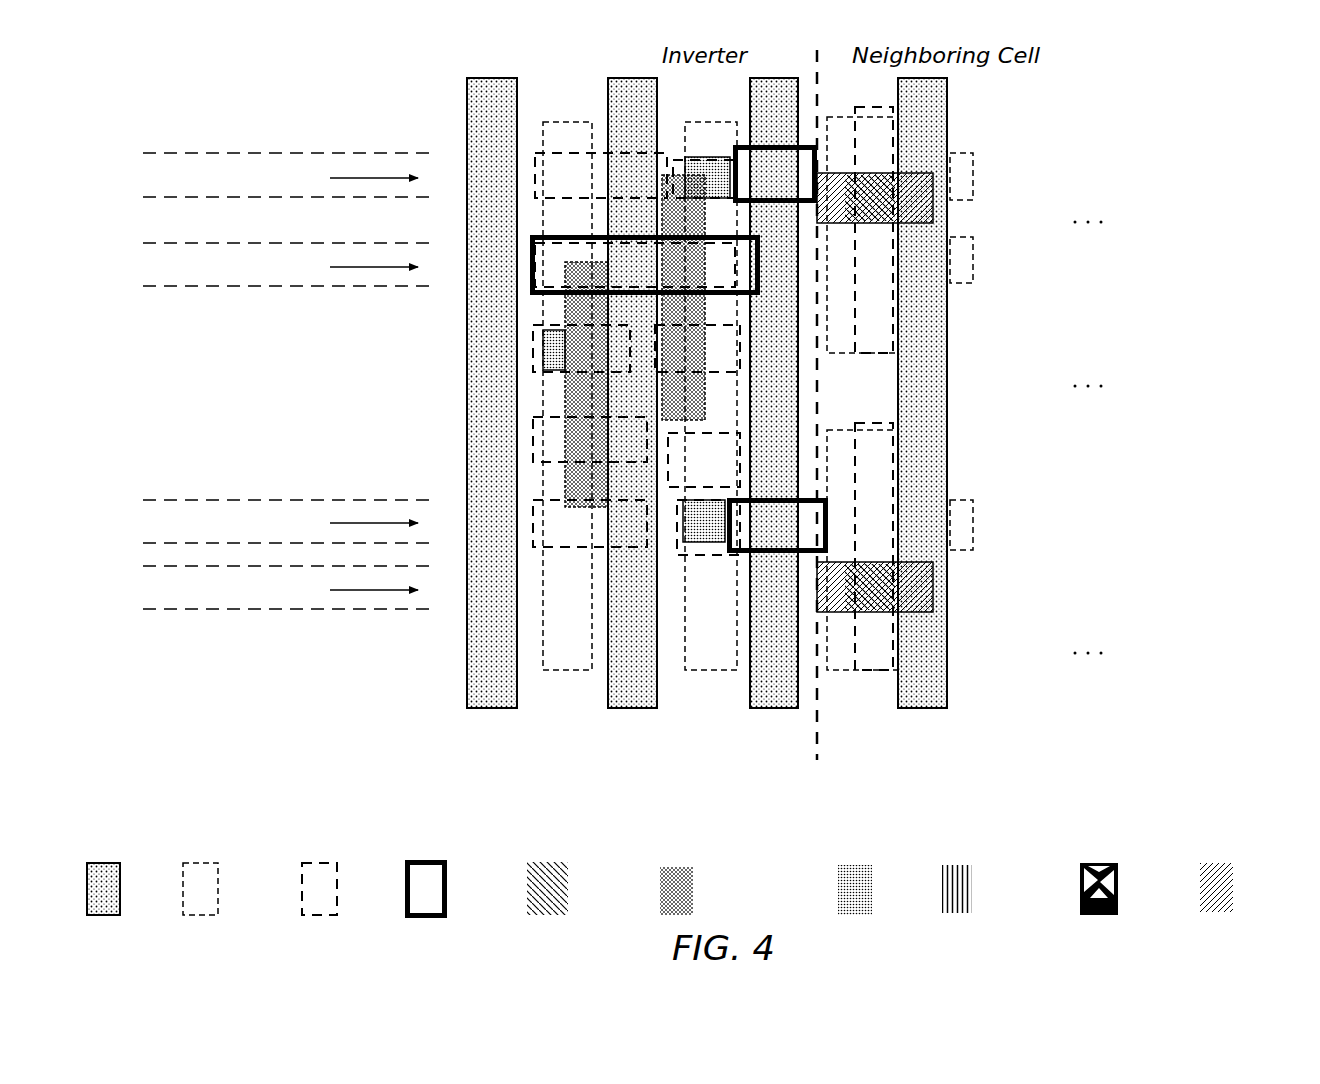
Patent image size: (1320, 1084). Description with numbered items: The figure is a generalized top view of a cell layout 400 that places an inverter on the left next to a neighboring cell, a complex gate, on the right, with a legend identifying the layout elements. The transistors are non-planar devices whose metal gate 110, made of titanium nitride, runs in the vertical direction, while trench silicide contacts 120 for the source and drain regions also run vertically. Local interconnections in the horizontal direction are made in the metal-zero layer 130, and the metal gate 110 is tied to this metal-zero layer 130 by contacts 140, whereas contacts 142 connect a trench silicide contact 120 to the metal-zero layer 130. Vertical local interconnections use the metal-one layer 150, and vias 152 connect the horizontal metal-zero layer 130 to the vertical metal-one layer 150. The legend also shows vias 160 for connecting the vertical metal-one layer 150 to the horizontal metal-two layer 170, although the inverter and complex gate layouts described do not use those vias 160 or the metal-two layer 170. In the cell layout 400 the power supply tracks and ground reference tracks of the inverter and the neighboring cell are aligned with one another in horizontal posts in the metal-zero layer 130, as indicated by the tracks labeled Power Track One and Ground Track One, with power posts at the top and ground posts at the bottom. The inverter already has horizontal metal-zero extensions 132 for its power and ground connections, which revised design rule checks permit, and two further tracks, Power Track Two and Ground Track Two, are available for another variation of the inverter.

The metal gate 110 is at (103, 862).
The trench silicide contact 120 is at (200, 862).
The metal 0 130 is at (318, 862).
The M0 extension 132 is at (425, 860).
The contact 140 is at (547, 862).
The contact 142 is at (678, 867).
The metal 1 150 is at (853, 865).
The via 152 is at (958, 865).
The via 160 is at (1095, 863).
The metal 2 170 is at (1218, 863).
The cell layout 400 is at (1258, 108).